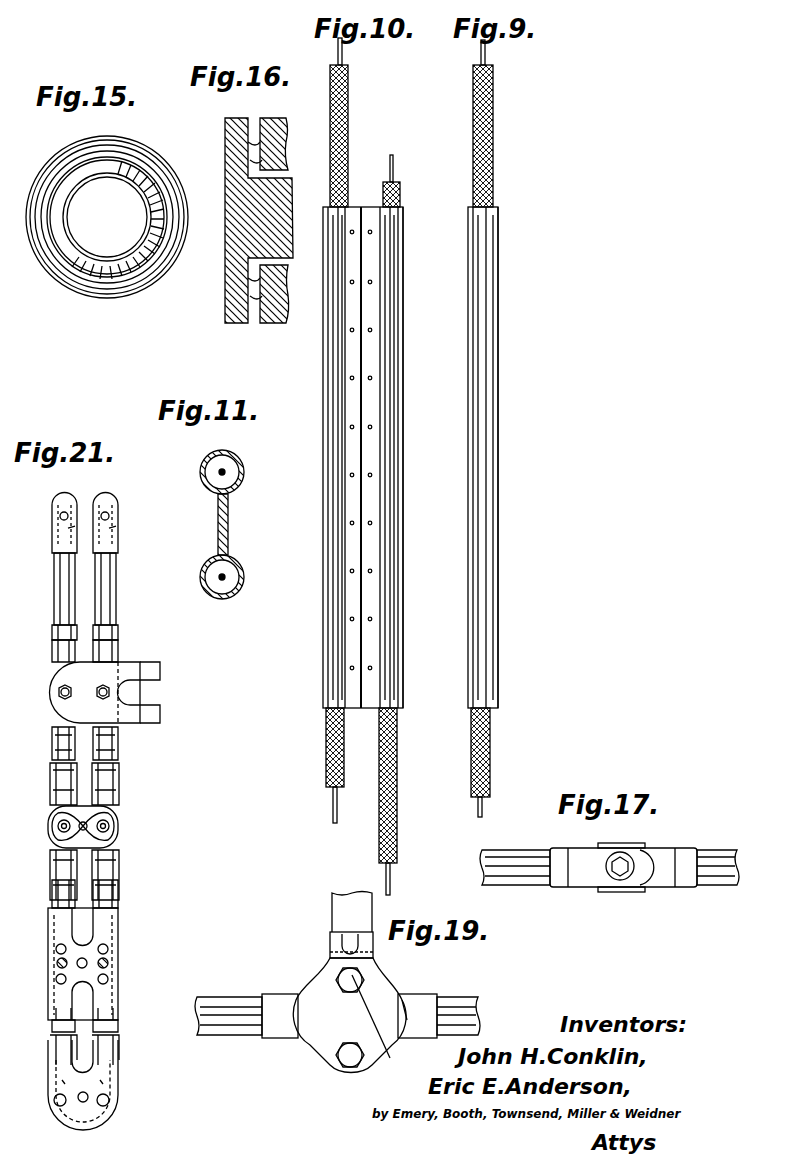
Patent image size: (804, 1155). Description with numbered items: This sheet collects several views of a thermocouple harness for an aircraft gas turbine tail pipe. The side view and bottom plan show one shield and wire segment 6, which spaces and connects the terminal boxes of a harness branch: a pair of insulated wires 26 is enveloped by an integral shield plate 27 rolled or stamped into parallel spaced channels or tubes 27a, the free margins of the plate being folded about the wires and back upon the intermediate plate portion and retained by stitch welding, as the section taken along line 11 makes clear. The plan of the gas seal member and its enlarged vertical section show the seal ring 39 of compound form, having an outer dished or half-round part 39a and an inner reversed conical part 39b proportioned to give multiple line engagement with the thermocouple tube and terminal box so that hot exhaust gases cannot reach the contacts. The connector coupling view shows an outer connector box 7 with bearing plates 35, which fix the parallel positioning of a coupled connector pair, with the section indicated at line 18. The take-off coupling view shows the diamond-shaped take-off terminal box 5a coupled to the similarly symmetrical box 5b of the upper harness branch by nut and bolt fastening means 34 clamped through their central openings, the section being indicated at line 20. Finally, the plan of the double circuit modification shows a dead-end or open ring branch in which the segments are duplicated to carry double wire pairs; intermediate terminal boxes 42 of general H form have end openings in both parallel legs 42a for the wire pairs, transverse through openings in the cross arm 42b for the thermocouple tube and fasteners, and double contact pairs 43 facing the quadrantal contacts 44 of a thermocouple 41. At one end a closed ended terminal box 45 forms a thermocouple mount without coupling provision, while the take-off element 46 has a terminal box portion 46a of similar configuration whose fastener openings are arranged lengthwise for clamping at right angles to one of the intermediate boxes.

In FIG. 15, the seal ring 39 is at (110, 298).
In FIG. 16, the seal ring 39 is at (255, 120).
In FIG. 15, the outer dished part of seal ring 39a is at (117, 160).
In FIG. 16, the outer dished part of seal ring 39a is at (250, 154).
In FIG. 15, the inner conical part of seal ring 39b is at (150, 252).
In FIG. 16, the inner conical part of seal ring 39b is at (250, 262).
In FIG. 10, the insulated wires 26 is at (384, 192).
In FIG. 9, the insulated wires 26 is at (493, 186).
In FIG. 11, the insulated wires 26 is at (238, 468).
In FIG. 10, the shield plate 27 is at (372, 468).
In FIG. 11, the shield plate 27 is at (229, 518).
In FIG. 10, the wire enveloping channels 27a is at (325, 667).
In FIG. 9, the wire enveloping channels 27a is at (488, 452).
In FIG. 11, the wire enveloping channels 27a is at (210, 460).
In FIG. 10, the shield and wire segment 6 is at (402, 394).
In FIG. 9, the shield and wire segment 6 is at (494, 394).
In FIG. 10, the section line 11 is at (423, 563).
In FIG. 21, the terminal box portion of take-off element 46a is at (124, 668).
In FIG. 21, the take-off element 46 is at (150, 692).
In FIG. 21, the thermocouple 41 is at (100, 800).
In FIG. 21, the quadrantal contacts 44 is at (57, 836).
In FIG. 21, the intermediate terminal box 42 is at (120, 952).
In FIG. 21, the double contact pairs 43 is at (100, 949).
In FIG. 21, the cross arm 42b is at (50, 980).
In FIG. 21, the parallel legs 42a is at (114, 1002).
In FIG. 21, the closed ended terminal box 45 is at (88, 1100).
In FIG. 17, the connector box 7 is at (567, 850).
In FIG. 17, the bearing plates 35 is at (625, 845).
In FIG. 17, the section line 18 is at (755, 866).
In FIG. 19, the terminal box on upper branch 5b is at (283, 995).
In FIG. 19, the take-off terminal box 5a is at (326, 1044).
In FIG. 19, the fastening means 34 is at (372, 1056).
In FIG. 19, the section line 20 is at (505, 1015).